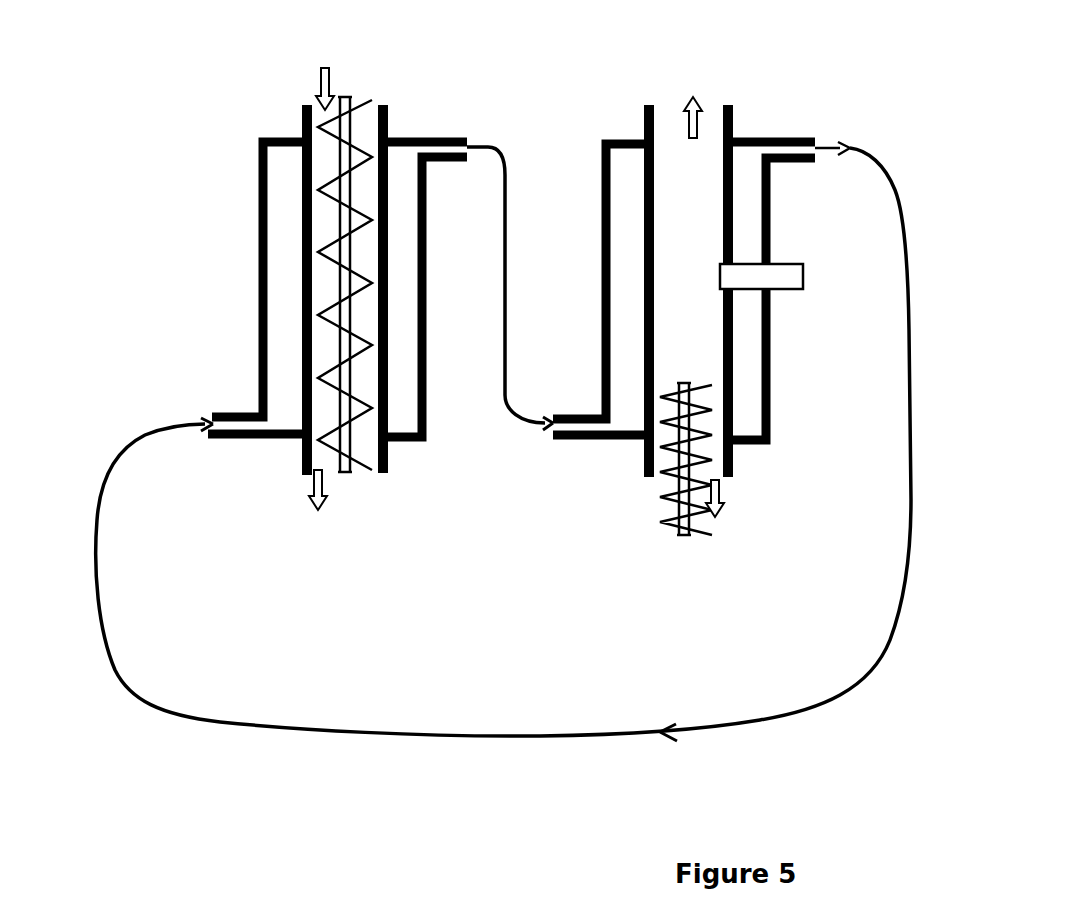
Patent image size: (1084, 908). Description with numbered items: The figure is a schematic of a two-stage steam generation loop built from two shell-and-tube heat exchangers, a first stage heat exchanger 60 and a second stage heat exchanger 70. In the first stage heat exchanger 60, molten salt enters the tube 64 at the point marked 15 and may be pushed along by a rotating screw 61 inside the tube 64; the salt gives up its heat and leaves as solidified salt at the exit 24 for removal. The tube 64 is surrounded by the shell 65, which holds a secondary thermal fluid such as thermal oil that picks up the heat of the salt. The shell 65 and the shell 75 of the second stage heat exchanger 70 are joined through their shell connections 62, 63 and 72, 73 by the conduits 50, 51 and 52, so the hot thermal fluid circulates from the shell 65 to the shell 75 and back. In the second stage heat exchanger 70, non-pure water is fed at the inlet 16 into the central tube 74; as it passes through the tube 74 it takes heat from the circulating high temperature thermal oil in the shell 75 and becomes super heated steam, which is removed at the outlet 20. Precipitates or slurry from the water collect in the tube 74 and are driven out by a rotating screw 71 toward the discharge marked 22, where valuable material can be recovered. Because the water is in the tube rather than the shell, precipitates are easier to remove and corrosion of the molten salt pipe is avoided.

The feed material inlet 15 is at (313, 93).
The inlet 16 is at (774, 278).
The outlet 20 is at (703, 118).
The char outlet 22 is at (722, 493).
The solidified salt exit 24 is at (317, 509).
The conduit 50 is at (118, 475).
The conduit 51 is at (507, 223).
The conduit 52 is at (904, 204).
The first stage heat exchanger 60 is at (327, 317).
The rotating screw 61 is at (366, 93).
The first reactor inlet 62 is at (237, 438).
The first reactor outlet 63 is at (433, 137).
The tube 64 is at (320, 207).
The shell 65 is at (278, 287).
The second stage heat exchanger 70 is at (703, 348).
The rotating screw 71 is at (657, 512).
The second reactor inlet 72 is at (585, 443).
The second reactor outlet 73 is at (780, 138).
The tube 74 is at (667, 218).
The shell 75 is at (620, 307).